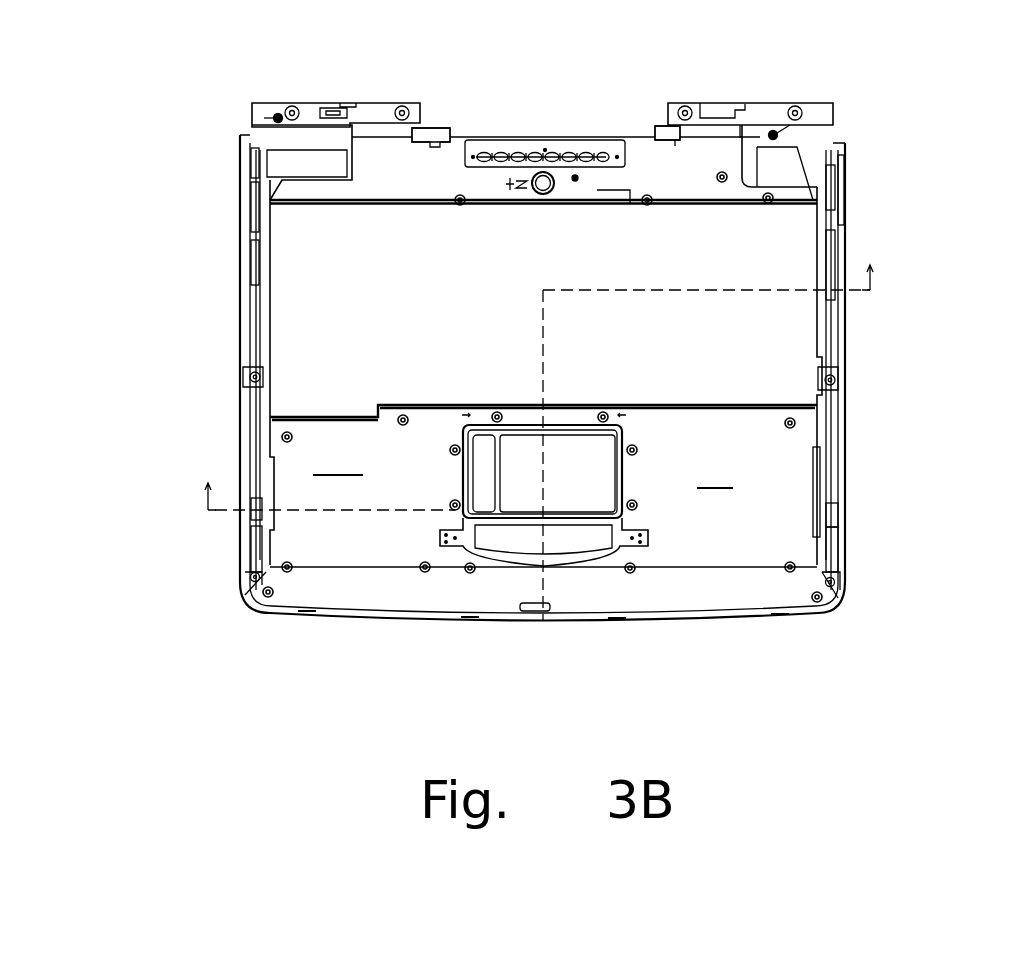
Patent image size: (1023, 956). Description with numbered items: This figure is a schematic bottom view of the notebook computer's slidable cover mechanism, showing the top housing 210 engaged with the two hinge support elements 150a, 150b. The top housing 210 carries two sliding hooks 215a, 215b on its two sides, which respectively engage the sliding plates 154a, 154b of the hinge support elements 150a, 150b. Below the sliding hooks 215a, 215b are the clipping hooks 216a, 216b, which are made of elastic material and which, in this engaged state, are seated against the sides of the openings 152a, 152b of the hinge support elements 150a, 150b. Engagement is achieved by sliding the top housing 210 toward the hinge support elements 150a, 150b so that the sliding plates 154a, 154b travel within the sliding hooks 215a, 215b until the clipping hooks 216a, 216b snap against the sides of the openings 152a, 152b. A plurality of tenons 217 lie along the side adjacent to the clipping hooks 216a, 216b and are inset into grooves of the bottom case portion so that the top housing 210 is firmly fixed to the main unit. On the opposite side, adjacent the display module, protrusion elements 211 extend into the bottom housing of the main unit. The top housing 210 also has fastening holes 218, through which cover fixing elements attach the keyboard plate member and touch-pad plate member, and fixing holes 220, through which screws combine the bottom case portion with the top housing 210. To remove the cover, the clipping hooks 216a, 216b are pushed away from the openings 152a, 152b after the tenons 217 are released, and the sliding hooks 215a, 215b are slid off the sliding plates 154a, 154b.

The hinge support element 150a is at (823, 150).
The hinge support element 150b is at (272, 122).
The opening 152a is at (834, 545).
The opening 152b is at (253, 551).
The sliding plate 154a is at (830, 194).
The sliding plate 154b is at (253, 188).
The top housing 210 is at (313, 322).
The protrusion element 211 is at (448, 130).
The sliding hook 215a is at (846, 228).
The sliding hook 215b is at (253, 153).
The clipping hook 216a is at (838, 513).
The clipping hook 216b is at (253, 510).
The tenon 217 is at (306, 617).
The fastening hole 218 is at (287, 434).
The fixing hole 220 is at (262, 595).